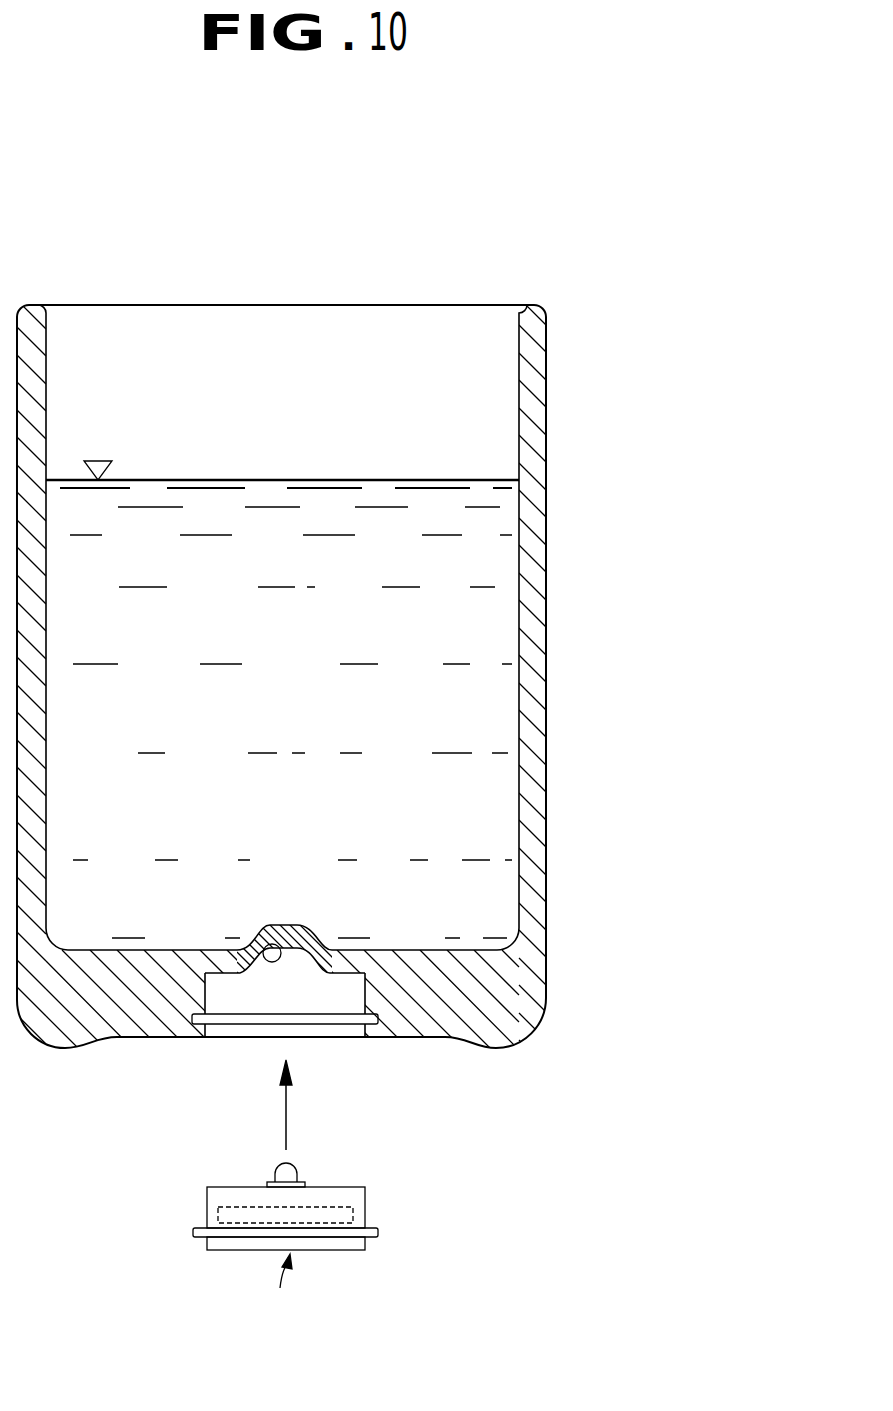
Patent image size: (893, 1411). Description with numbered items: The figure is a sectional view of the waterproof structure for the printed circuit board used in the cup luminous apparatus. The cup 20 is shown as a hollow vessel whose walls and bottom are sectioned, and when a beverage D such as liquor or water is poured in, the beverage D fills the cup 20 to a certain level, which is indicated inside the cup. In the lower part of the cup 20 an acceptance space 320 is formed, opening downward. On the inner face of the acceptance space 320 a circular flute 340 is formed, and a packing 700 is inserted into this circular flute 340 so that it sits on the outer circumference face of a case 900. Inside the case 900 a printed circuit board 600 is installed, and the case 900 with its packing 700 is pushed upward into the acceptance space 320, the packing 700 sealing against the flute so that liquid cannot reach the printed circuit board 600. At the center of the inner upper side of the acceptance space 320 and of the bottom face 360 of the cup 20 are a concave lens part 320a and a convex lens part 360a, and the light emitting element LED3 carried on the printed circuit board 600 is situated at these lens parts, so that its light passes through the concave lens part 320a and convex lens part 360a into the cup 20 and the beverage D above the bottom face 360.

The cup 20 is at (539, 508).
The beverage D is at (490, 476).
The bottom face 360 is at (407, 950).
The convex lens part 360a is at (300, 928).
The acceptance space 320 is at (205, 998).
The concave lens part 320a is at (256, 941).
The circular flute 340 is at (372, 1024).
The light emitting element LED3 is at (297, 1165).
The printed circuit board 600 is at (355, 1207).
The packing 700 is at (374, 1234).
The case 900 is at (279, 1289).